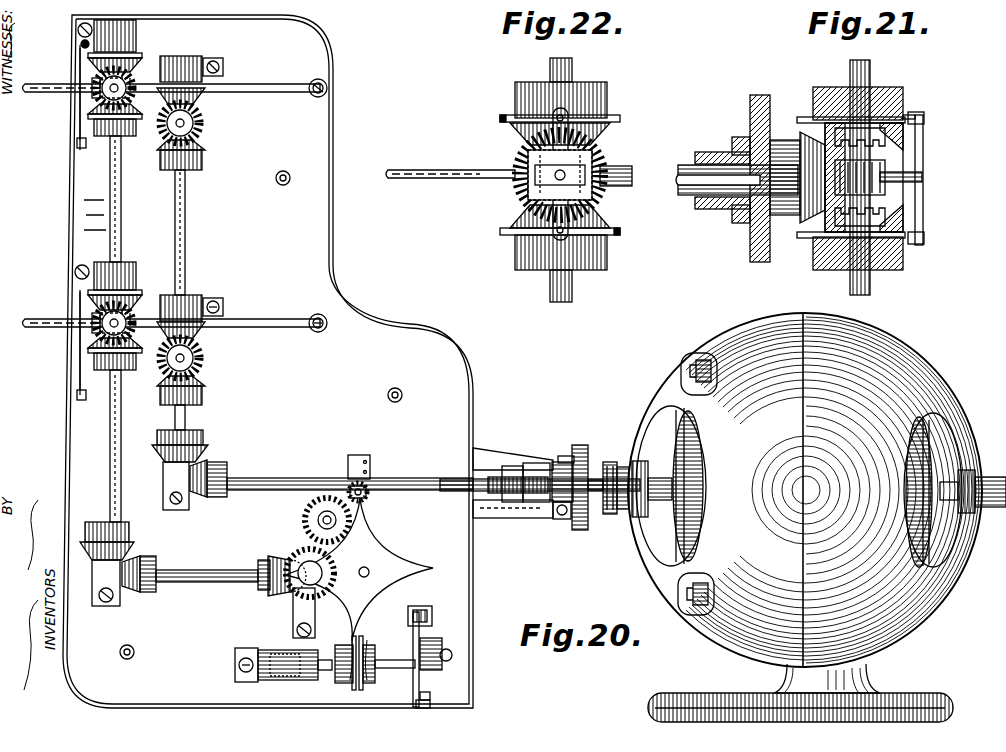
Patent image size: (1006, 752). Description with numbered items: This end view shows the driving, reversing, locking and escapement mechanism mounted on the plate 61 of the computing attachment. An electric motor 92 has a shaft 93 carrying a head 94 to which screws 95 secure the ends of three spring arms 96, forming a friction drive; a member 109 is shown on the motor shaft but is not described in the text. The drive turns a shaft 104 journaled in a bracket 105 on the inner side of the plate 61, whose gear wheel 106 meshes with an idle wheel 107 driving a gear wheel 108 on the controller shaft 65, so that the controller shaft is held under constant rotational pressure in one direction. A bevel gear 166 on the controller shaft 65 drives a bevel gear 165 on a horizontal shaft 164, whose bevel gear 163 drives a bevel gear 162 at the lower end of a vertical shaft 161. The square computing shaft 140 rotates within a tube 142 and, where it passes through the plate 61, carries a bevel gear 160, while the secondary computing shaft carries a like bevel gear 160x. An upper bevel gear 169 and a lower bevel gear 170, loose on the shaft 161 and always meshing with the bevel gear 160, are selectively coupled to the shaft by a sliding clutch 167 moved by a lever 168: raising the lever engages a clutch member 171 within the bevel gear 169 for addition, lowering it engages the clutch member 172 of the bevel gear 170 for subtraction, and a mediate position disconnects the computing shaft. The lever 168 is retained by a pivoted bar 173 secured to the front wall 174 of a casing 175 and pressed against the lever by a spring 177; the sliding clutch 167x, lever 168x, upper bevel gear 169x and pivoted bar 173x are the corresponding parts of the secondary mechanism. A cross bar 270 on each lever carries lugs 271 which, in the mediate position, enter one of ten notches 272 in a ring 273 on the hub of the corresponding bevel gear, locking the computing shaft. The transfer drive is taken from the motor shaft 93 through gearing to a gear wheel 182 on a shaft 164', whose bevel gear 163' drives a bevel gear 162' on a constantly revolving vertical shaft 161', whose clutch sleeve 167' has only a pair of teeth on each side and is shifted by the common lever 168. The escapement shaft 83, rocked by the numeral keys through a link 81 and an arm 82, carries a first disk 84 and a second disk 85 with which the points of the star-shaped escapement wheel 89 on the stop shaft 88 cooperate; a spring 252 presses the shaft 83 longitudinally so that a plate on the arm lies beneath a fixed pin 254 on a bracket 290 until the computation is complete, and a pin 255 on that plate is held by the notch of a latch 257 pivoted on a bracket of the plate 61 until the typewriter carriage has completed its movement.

In FIG. 20, the plate 61 is at (268, 361).
In FIG. 21, the plate 61 is at (752, 104).
In FIG. 20, the controller shaft 65 is at (278, 592).
In FIG. 20, the link 81 is at (420, 612).
In FIG. 20, the arm 82 is at (412, 630).
In FIG. 20, the escapement shaft 83 is at (392, 668).
In FIG. 20, the first disk 84 is at (360, 688).
In FIG. 20, the second disk 85 is at (352, 688).
In FIG. 20, the stop shaft 88 is at (364, 566).
In FIG. 20, the escapement wheel 89 is at (385, 562).
In FIG. 20, the electric motor 92 is at (817, 517).
In FIG. 20, the motor shaft 93 is at (500, 482).
In FIG. 20, the head 94 is at (552, 462).
In FIG. 20, the screws 95 is at (572, 458).
In FIG. 20, the spring arms 96 is at (500, 460).
In FIG. 20, the shaft 104 is at (370, 492).
In FIG. 20, the bracket 105 is at (360, 456).
In FIG. 20, the gear wheel 106 is at (368, 500).
In FIG. 20, the idle wheel 107 is at (312, 503).
In FIG. 20, the gear wheel 108 is at (303, 550).
In FIG. 20, the hub 109 is at (538, 462).
In FIG. 21, the computing shaft 140 is at (686, 186).
In FIG. 21, the tube 142 is at (724, 150).
In FIG. 20, the bevel gear 160 is at (132, 78).
In FIG. 22, the bevel gear 160 is at (512, 162).
In FIG. 21, the bevel gear 160 is at (786, 220).
In FIG. 20, the bevel gear 160x is at (132, 316).
In FIG. 20, the vertical shaft 161 is at (97, 329).
In FIG. 22, the vertical shaft 161 is at (581, 177).
In FIG. 21, the vertical shaft 161 is at (879, 174).
In FIG. 20, the vertical shaft 161' is at (195, 175).
In FIG. 20, the bevel gear 162 is at (121, 540).
In FIG. 20, the bevel gear 162' is at (191, 402).
In FIG. 20, the bevel gear 163 is at (124, 585).
In FIG. 20, the bevel gear 163' is at (217, 467).
In FIG. 20, the horizontal shaft 164 is at (207, 563).
In FIG. 20, the shaft 164' is at (350, 472).
In FIG. 20, the bevel gear 165 is at (262, 586).
In FIG. 20, the bevel gear 166 is at (322, 590).
In FIG. 20, the sliding clutch 167 is at (70, 78).
In FIG. 22, the sliding clutch 167 is at (619, 159).
In FIG. 21, the sliding clutch 167 is at (874, 176).
In FIG. 20, the clutch sleeve 167' is at (201, 108).
In FIG. 20, the sliding clutch 167x is at (92, 316).
In FIG. 20, the lever 168 is at (66, 92).
In FIG. 22, the lever 168 is at (440, 180).
In FIG. 21, the lever 168 is at (922, 180).
In FIG. 20, the lever 168x is at (64, 328).
In FIG. 20, the upper bevel gear 169 is at (135, 62).
In FIG. 22, the upper bevel gear 169 is at (520, 130).
In FIG. 21, the upper bevel gear 169 is at (814, 108).
In FIG. 20, the upper bevel gear 169x is at (135, 300).
In FIG. 20, the lower bevel gear 170 is at (135, 122).
In FIG. 22, the lower bevel gear 170 is at (520, 210).
In FIG. 21, the lower bevel gear 170 is at (892, 270).
In FIG. 21, the clutch member 171 is at (880, 148).
In FIG. 21, the clutch member 172 is at (878, 210).
In FIG. 20, the pivoted bar 173 is at (79, 118).
In FIG. 20, the pivoted bar 173x is at (79, 352).
In FIG. 20, the front wall 174 is at (72, 178).
In FIG. 20, the casing 175 is at (84, 210).
In FIG. 20, the spring 177 is at (80, 44).
In FIG. 20, the gear wheel 182 is at (200, 138).
In FIG. 20, the spring 252 is at (282, 672).
In FIG. 20, the fixed pin 254 is at (438, 644).
In FIG. 20, the pin 255 is at (432, 695).
In FIG. 20, the latch 257 is at (430, 704).
In FIG. 22, the cross bar 270 is at (556, 244).
In FIG. 21, the cross bar 270 is at (924, 146).
In FIG. 22, the lug 271 is at (556, 112).
In FIG. 21, the lug 271 is at (918, 112).
In FIG. 22, the notches 272 is at (512, 114).
In FIG. 21, the notches 272 is at (800, 118).
In FIG. 20, the ring 273 is at (100, 140).
In FIG. 22, the ring 273 is at (620, 118).
In FIG. 21, the ring 273 is at (920, 124).
In FIG. 20, the bracket 290 is at (446, 652).